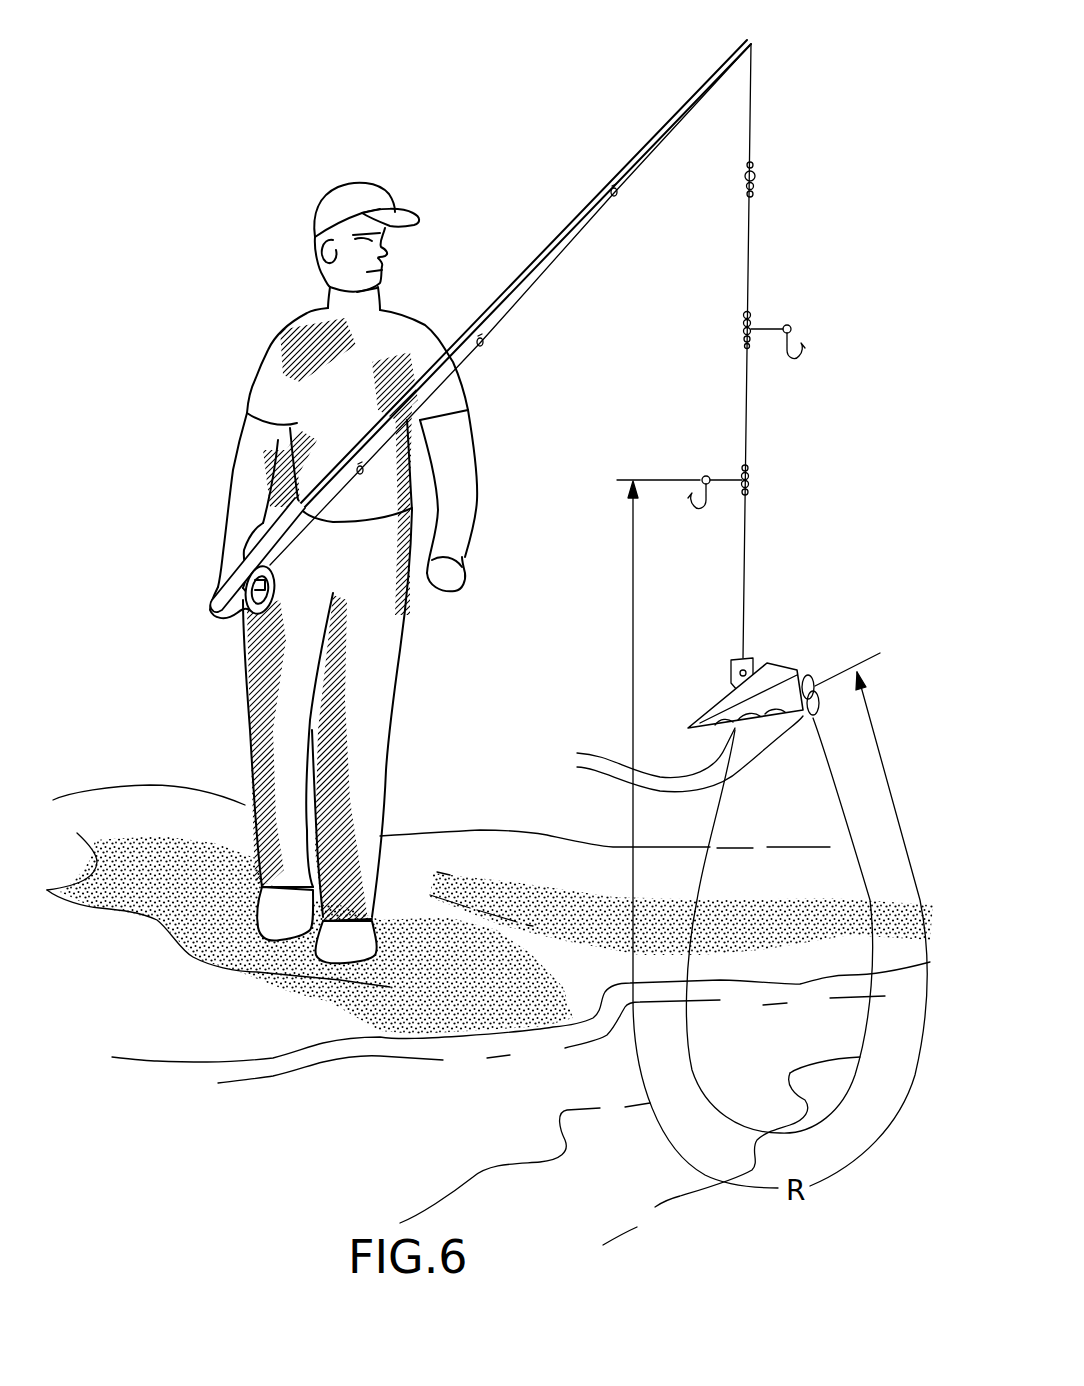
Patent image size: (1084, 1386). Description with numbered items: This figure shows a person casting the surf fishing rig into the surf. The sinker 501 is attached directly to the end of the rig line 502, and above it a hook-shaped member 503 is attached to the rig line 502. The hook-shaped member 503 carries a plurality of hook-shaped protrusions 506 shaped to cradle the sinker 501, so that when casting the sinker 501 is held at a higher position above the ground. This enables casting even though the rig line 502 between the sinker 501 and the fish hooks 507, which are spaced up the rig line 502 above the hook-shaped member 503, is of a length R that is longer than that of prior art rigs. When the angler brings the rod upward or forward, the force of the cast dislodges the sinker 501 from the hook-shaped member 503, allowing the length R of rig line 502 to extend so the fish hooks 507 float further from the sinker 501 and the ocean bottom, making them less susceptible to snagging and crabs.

The sinker 501 is at (792, 664).
The rig line 502 is at (858, 870).
The hook-shaped member 503 is at (730, 660).
The hook-shaped protrusions 506 is at (664, 754).
The fish hooks 507 is at (800, 347).